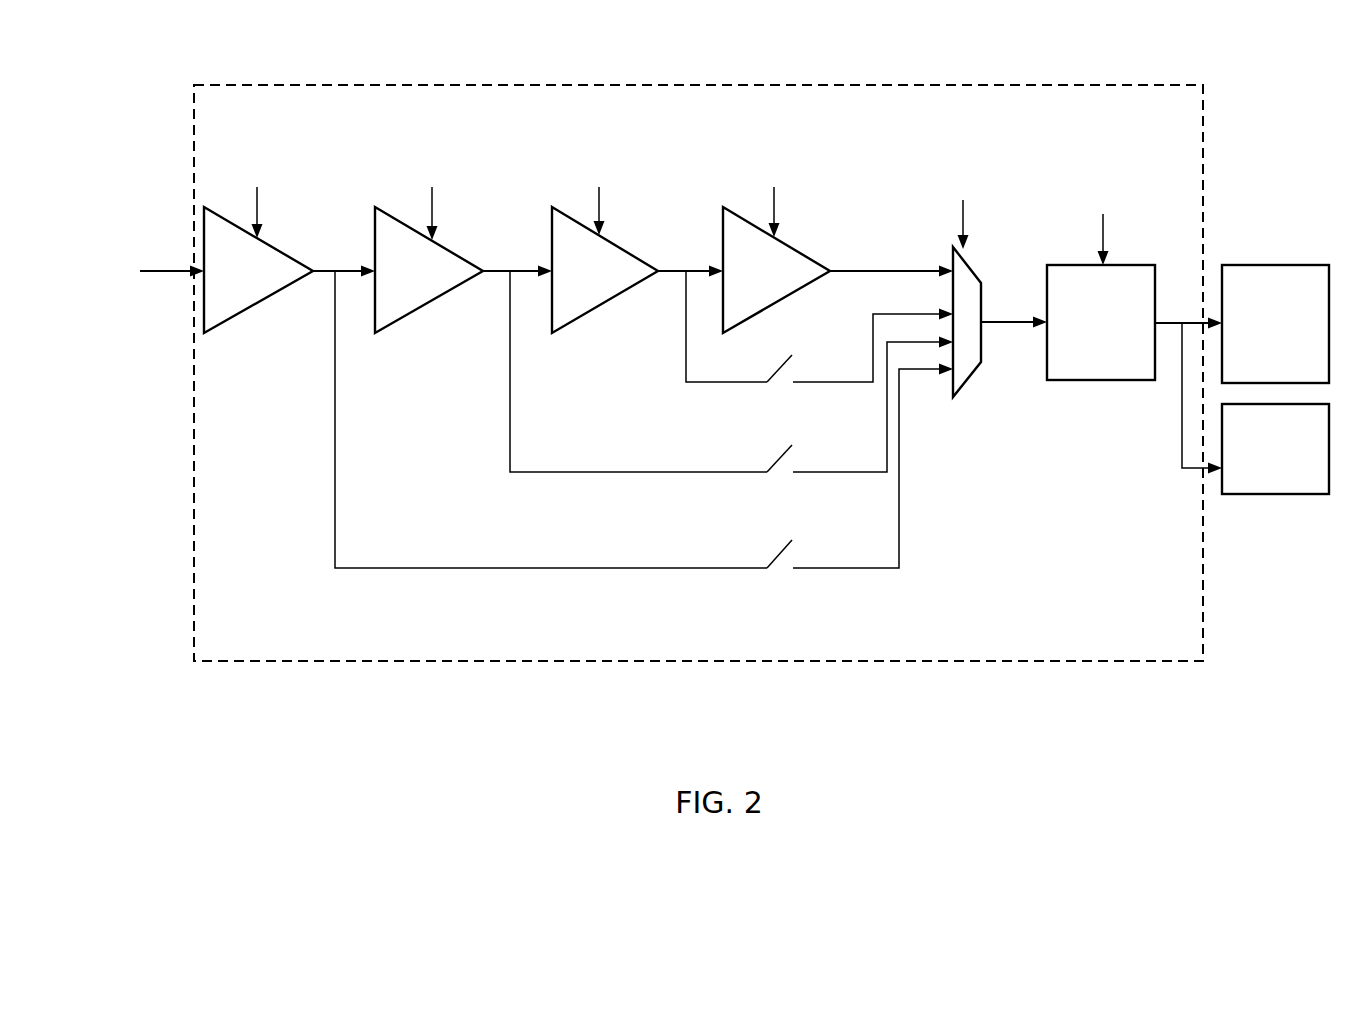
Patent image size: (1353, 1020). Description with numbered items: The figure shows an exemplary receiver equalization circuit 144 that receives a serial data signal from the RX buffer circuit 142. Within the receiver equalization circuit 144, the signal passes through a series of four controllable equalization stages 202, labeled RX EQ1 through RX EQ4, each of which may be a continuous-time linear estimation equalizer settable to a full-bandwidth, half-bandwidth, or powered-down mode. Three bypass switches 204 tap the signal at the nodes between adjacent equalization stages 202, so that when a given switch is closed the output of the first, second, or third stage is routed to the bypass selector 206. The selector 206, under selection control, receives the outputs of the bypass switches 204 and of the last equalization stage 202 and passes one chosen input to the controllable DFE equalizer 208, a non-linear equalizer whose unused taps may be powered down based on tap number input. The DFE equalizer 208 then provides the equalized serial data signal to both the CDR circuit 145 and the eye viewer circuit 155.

The RX buffer circuit 142 is at (131, 277).
The receiver equalization circuit 144 is at (975, 668).
The CDR circuit 145 is at (1242, 324).
The eye viewer circuit 155 is at (1255, 408).
The controllable equalization stage 202 is at (578, 238).
The bypass switch 204 is at (644, 439).
The bypass selector 206 is at (988, 282).
The controllable DFE equalizer 208 is at (1101, 277).